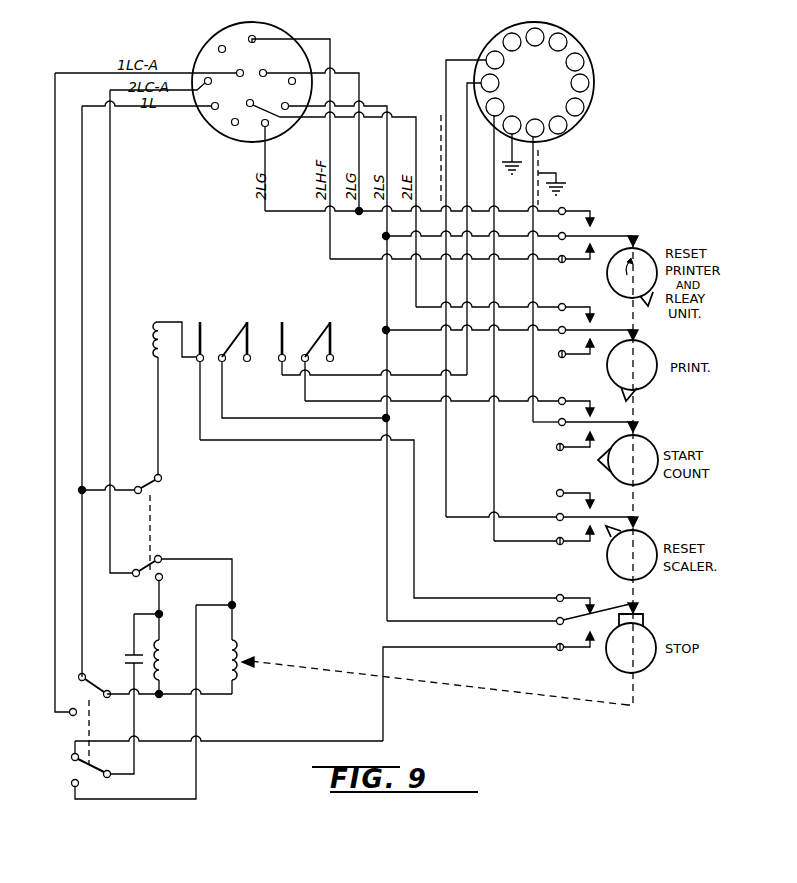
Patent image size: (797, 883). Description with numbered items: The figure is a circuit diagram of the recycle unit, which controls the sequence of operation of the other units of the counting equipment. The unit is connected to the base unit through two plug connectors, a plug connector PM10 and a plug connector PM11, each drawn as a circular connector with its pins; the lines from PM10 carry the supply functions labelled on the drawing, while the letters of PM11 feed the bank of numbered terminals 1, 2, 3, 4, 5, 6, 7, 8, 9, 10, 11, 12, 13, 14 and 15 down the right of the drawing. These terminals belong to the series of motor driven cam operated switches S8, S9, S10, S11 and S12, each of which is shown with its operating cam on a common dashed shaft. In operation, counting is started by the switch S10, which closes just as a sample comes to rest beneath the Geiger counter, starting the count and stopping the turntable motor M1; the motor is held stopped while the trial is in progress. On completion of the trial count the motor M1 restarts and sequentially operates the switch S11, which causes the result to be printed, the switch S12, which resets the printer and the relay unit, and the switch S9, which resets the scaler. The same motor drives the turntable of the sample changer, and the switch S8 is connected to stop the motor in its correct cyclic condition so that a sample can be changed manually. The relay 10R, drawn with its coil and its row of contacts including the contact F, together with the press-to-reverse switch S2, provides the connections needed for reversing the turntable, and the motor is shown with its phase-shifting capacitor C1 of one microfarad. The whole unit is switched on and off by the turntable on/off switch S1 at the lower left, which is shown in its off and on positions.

The plug connector PM10 is at (206, 36).
The plug connector PM11 is at (589, 38).
The terminal 1 is at (429, 206).
The terminal 2 is at (511, 230).
The terminal 3 is at (462, 251).
The terminal 4 is at (505, 304).
The terminal 5 is at (511, 325).
The terminal 6 is at (577, 346).
The terminal 7 is at (449, 398).
The terminal 8 is at (585, 417).
The terminal 9 is at (567, 443).
The terminal 10 is at (564, 496).
The terminal 11 is at (542, 513).
The terminal 12 is at (544, 544).
The terminal 13 is at (397, 524).
The terminal 14 is at (512, 614).
The terminal 15 is at (488, 685).
The cam operated switch S8 is at (570, 655).
The cam operated switch S9 is at (570, 550).
The cam operated switch S10 is at (570, 456).
The cam operated switch S11 is at (574, 362).
The cam operated switch S12 is at (574, 267).
The relay 10R is at (270, 388).
The switch contact F is at (129, 482).
The reversing switch S2 is at (183, 548).
The on/off switch S1 is at (209, 727).
The Bodine motor 6 RPM M1 is at (204, 639).
The 1 microfarad capacitor C1 is at (123, 694).